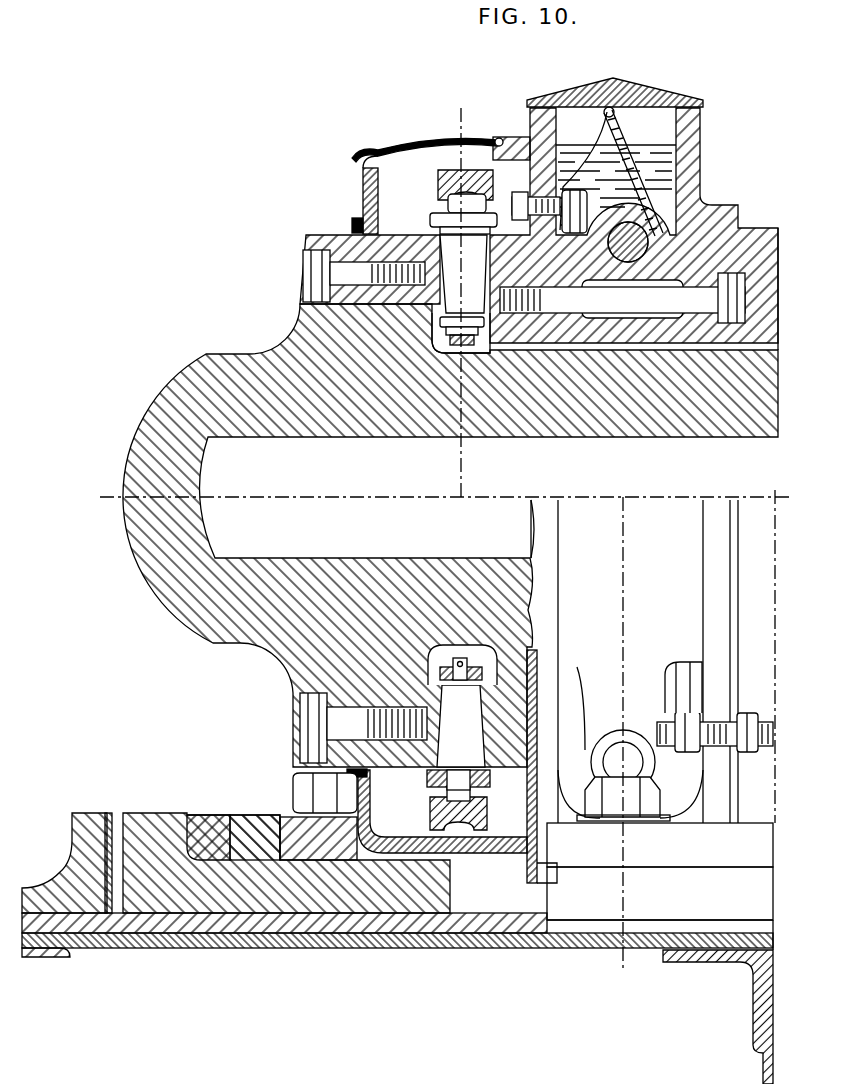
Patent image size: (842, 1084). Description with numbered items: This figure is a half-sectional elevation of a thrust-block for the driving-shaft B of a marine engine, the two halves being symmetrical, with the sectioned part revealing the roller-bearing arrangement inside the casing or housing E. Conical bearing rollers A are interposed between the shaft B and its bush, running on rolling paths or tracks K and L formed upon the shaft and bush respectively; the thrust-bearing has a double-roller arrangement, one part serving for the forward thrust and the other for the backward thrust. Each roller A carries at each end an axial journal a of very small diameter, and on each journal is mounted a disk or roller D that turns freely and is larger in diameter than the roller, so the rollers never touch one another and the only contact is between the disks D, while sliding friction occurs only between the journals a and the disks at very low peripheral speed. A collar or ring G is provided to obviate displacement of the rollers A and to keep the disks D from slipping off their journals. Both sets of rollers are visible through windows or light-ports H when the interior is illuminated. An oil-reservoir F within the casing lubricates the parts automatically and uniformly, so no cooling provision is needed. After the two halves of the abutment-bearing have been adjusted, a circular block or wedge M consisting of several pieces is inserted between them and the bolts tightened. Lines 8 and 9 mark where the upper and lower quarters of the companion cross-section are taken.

The rollers A is at (462, 501).
The shaft B is at (247, 343).
The disk or roller D is at (418, 790).
The casing or housing E is at (740, 218).
The oil-reservoir F is at (615, 157).
The collar or ring G is at (438, 174).
The windows or light-ports H is at (452, 148).
The rolling path or track K is at (419, 234).
The rolling path or track L is at (496, 316).
The circular block or wedge M is at (746, 280).
The axial journal a is at (458, 779).
The section line 8 8 is at (470, 296).
The section line 9 9 is at (632, 734).